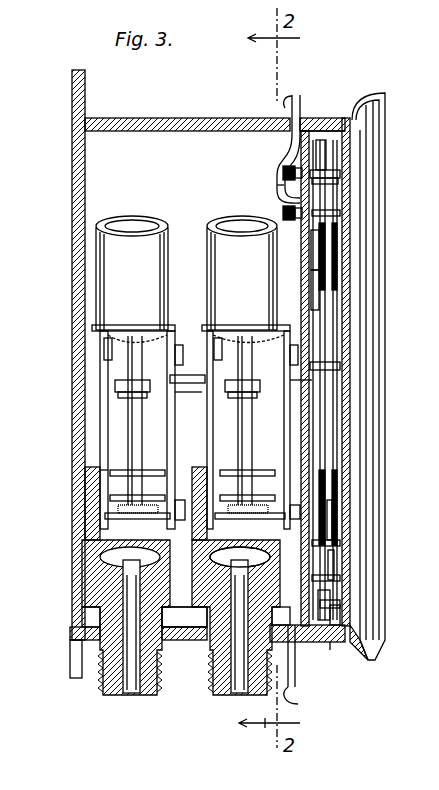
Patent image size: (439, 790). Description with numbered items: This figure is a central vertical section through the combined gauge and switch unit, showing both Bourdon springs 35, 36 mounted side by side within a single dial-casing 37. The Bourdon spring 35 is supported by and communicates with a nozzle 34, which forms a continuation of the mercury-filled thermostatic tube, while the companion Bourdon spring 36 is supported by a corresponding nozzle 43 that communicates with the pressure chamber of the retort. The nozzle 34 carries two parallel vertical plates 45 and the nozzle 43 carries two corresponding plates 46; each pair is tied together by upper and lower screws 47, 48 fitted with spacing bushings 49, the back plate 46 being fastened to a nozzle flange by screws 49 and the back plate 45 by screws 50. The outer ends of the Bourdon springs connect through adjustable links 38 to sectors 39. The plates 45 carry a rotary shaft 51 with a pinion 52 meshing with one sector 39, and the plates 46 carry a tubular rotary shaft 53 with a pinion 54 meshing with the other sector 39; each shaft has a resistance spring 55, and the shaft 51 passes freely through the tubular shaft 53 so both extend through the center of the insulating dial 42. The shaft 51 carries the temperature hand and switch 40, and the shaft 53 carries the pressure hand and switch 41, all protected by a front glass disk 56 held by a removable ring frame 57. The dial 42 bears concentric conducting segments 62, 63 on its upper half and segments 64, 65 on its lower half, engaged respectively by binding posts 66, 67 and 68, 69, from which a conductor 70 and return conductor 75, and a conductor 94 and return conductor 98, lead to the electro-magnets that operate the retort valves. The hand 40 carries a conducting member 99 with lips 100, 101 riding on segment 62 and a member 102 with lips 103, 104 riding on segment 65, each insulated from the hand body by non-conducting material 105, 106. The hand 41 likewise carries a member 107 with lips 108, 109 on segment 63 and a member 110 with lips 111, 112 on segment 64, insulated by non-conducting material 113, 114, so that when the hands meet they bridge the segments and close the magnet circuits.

The nozzle 34 is at (126, 631).
The Bourdon spring 35 is at (142, 222).
The Bourdon spring 36 is at (238, 222).
The dial-casing 37 is at (207, 374).
The adjustable links 38 is at (142, 427).
The sectors 39 is at (128, 454).
The hand and switch 40 is at (313, 318).
The hand and switch 41 is at (325, 350).
The dial 42 is at (311, 272).
The nozzle 43 is at (236, 631).
The parallel vertical plates 45 is at (96, 405).
The parallel vertical plates 46 is at (205, 453).
The screws 47 is at (180, 345).
The screws 48 is at (180, 520).
The spacing bushings 49 is at (136, 328).
The screws 50 is at (85, 484).
The rotary shaft 51 is at (185, 394).
The pinion 52 is at (124, 398).
The tubular rotary shaft 53 is at (380, 367).
The pinion 54 is at (234, 398).
The resistance spring 55 is at (104, 350).
The front glass disk 56 is at (346, 197).
The removable ring frame 57 is at (364, 263).
The conducting segment 62 is at (340, 160).
The conducting segment 63 is at (305, 296).
The conducting segment 64 is at (330, 606).
The conducting segment 65 is at (316, 430).
The binding post 66 is at (283, 173).
The binding post 67 is at (283, 213).
The binding post 68 is at (270, 600).
The binding post 69 is at (270, 552).
The conductor 70 is at (300, 100).
The conductor 75 is at (286, 93).
The conductor 94 is at (295, 680).
The conductor 98 is at (298, 704).
The conducting member 99 is at (150, 519).
The lip 100 is at (326, 143).
The lip 101 is at (338, 181).
The conducting member 102 is at (334, 562).
The lip 103 is at (340, 619).
The lip 104 is at (340, 543).
The non-conducting material 105 is at (337, 242).
The non-conducting material 106 is at (337, 479).
The conducting member 107 is at (277, 188).
The lip 108 is at (328, 118).
The lip 109 is at (340, 213).
The conducting member 110 is at (340, 602).
The lip 111 is at (330, 650).
The lip 112 is at (340, 578).
The non-conducting material 113 is at (311, 250).
The non-conducting material 114 is at (332, 515).